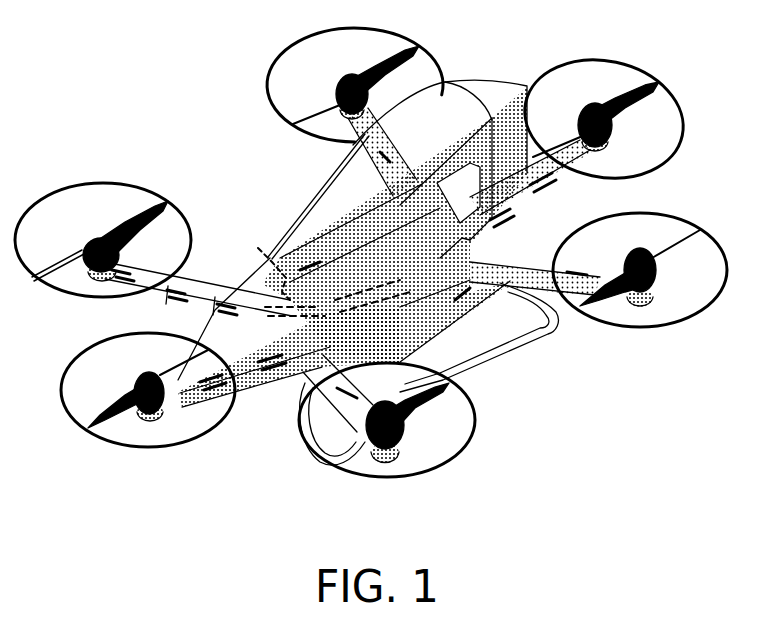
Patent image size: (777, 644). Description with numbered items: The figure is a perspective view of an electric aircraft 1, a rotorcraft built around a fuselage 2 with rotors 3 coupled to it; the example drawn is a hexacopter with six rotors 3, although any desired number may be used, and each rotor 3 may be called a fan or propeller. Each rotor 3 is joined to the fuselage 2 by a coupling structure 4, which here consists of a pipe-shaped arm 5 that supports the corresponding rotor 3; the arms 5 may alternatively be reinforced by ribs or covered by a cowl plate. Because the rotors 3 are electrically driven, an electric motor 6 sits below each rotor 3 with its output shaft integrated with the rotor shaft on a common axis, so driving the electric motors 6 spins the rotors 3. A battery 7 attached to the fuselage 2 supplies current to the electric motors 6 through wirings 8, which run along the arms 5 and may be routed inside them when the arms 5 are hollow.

The electric aircraft 1 is at (167, 97).
The fuselage 2 is at (306, 187).
The rotor 3 is at (100, 183).
The coupling structure 4 is at (209, 278).
The arm 5 is at (168, 305).
The electric motor 6 is at (85, 281).
The battery 7 is at (262, 247).
The wiring 8 is at (256, 405).